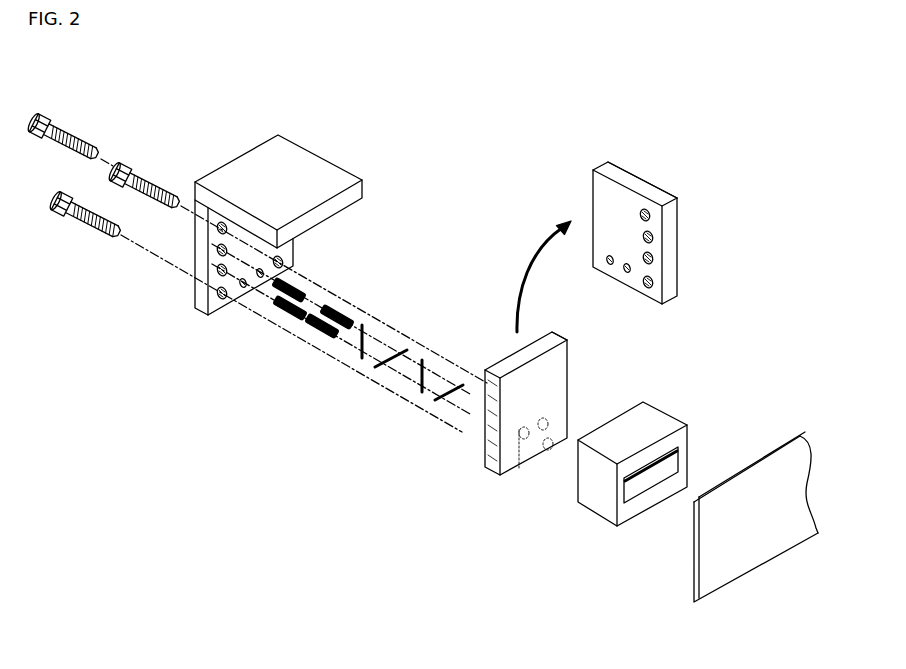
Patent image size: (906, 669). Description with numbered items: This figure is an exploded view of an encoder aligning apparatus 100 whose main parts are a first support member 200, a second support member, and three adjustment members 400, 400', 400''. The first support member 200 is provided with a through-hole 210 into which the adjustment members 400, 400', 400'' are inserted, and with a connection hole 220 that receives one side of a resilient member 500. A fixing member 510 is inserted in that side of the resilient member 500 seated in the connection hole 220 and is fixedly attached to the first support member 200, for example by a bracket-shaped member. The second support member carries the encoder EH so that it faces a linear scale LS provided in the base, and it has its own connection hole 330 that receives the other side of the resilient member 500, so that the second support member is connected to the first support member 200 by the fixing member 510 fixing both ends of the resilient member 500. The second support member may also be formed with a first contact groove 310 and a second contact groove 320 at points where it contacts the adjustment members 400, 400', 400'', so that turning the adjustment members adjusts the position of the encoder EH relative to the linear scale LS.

The encoder aligning apparatus 100 is at (467, 80).
The first support member 200 is at (302, 162).
The through-hole 210 is at (215, 230).
The connection hole 220 is at (215, 256).
The first contact groove 310 is at (500, 474).
The second contact groove 320 is at (487, 363).
The connection hole 330 is at (485, 404).
The first adjustment member 400 is at (72, 234).
The second adjustment member 400' is at (63, 107).
The third adjustment member 400'' is at (144, 153).
The resilient member 500 is at (305, 290).
The fixing member 510 is at (362, 362).
The encoder EH is at (594, 506).
The linear scale LS is at (756, 545).